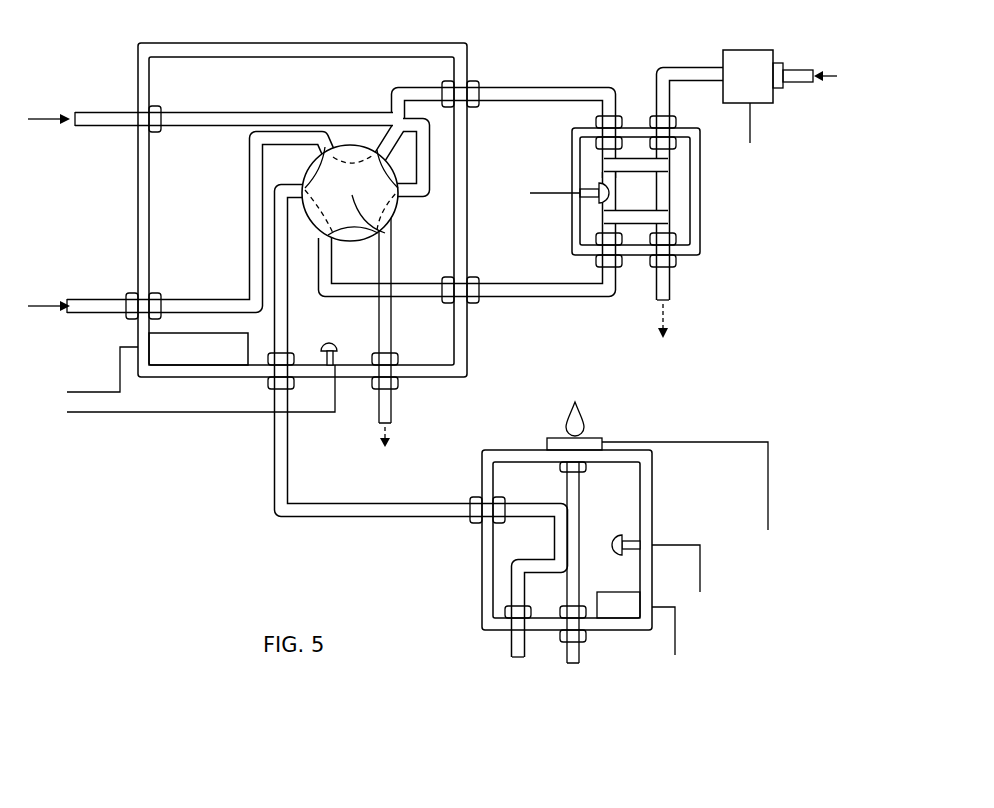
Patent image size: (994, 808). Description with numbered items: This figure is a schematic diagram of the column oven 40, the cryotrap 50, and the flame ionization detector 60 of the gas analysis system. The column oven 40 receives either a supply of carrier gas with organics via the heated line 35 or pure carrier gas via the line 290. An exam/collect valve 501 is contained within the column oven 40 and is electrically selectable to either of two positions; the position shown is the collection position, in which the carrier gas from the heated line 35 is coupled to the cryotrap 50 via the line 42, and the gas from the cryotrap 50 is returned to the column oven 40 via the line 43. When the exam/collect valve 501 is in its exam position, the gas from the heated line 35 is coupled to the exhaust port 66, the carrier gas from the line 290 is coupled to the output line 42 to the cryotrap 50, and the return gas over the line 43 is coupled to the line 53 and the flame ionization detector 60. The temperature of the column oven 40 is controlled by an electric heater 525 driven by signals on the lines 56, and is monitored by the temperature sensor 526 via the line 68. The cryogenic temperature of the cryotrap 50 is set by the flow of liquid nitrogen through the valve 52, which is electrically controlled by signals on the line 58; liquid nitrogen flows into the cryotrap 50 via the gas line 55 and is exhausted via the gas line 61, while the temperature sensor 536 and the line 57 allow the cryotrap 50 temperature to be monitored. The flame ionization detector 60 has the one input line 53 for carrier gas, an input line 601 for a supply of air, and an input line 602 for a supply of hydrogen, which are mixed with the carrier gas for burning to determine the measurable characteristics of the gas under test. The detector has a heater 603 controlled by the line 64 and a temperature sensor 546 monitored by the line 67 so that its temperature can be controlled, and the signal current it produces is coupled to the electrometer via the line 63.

The heated line 35 is at (105, 112).
The line 290 is at (99, 299).
The column oven 40 is at (202, 378).
The electric heater 525 is at (213, 360).
The temperature sensor 526 is at (332, 343).
The exam/collect valve 501 is at (381, 226).
The line 42 is at (531, 88).
The line 43 is at (533, 299).
The exhaust port 66 is at (393, 406).
The line 68 is at (224, 413).
The lines 56 is at (103, 392).
The line 53 is at (289, 460).
The gas line 55 is at (678, 62).
The valve 52 is at (752, 50).
The line 58 is at (752, 130).
The cryotrap 50 is at (712, 206).
The line 57 is at (550, 195).
The temperature sensor 536 is at (610, 192).
The gas line 61 is at (669, 283).
The flame ionization detector 60 is at (660, 506).
The line 63 is at (709, 486).
The temperature sensor 546 is at (617, 538).
The heater 603 is at (612, 605).
The line 67 is at (701, 582).
The line 64 is at (677, 638).
The input line 601 is at (581, 647).
The input line 602 is at (510, 643).